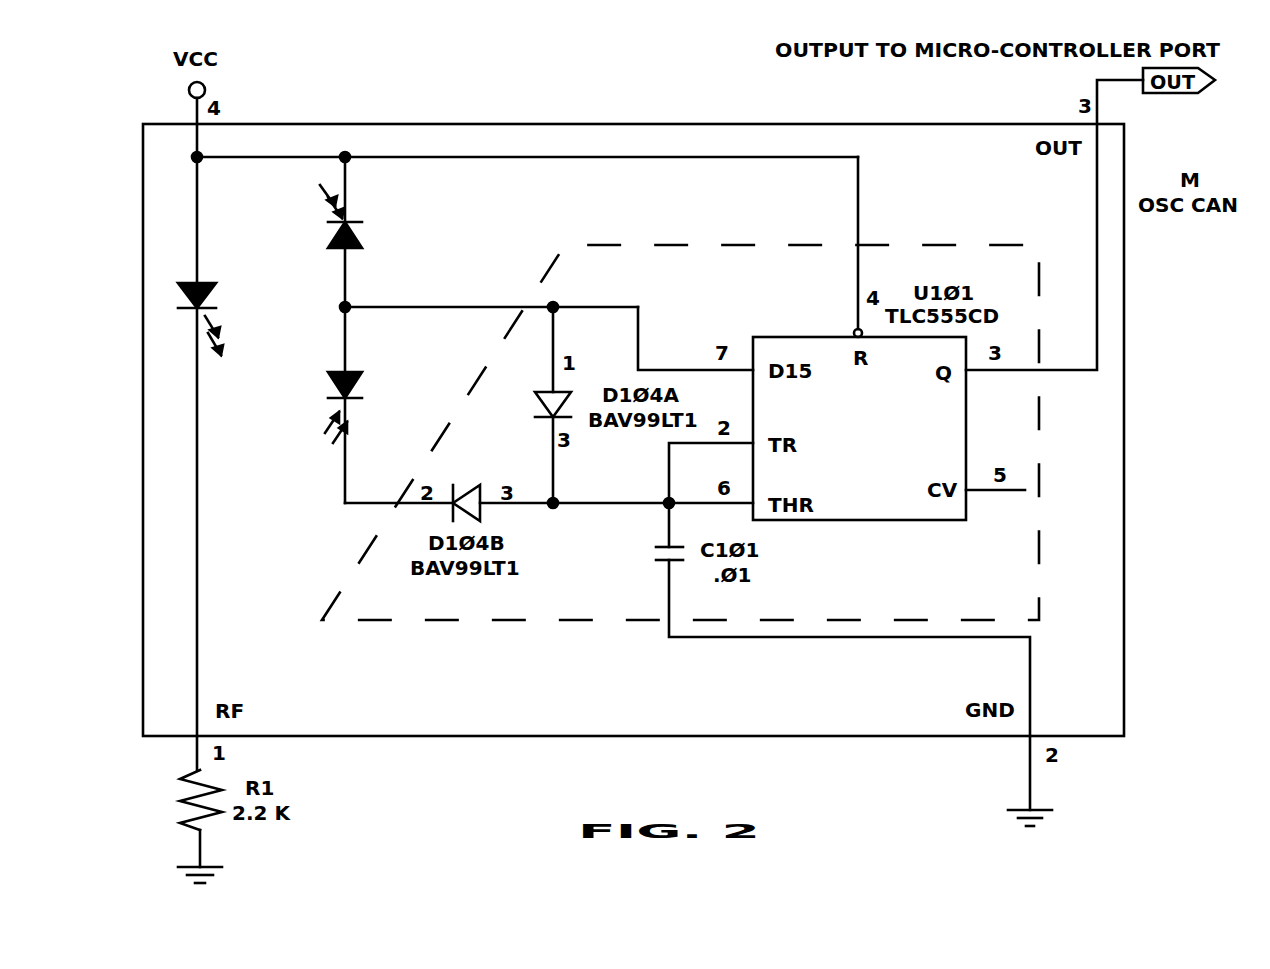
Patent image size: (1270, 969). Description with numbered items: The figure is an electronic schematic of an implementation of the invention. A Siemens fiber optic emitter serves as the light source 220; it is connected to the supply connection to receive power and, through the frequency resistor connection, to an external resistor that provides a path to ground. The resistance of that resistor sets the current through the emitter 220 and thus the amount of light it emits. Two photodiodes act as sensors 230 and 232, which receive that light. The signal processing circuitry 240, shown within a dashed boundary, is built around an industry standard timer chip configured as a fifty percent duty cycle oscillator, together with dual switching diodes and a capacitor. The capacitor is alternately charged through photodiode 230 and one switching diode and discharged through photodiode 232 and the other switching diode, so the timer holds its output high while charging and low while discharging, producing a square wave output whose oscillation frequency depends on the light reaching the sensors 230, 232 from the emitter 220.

The light source 220 is at (198, 285).
The sensor 230 is at (330, 232).
The sensor 232 is at (357, 373).
The signal processing circuitry 240 is at (597, 620).